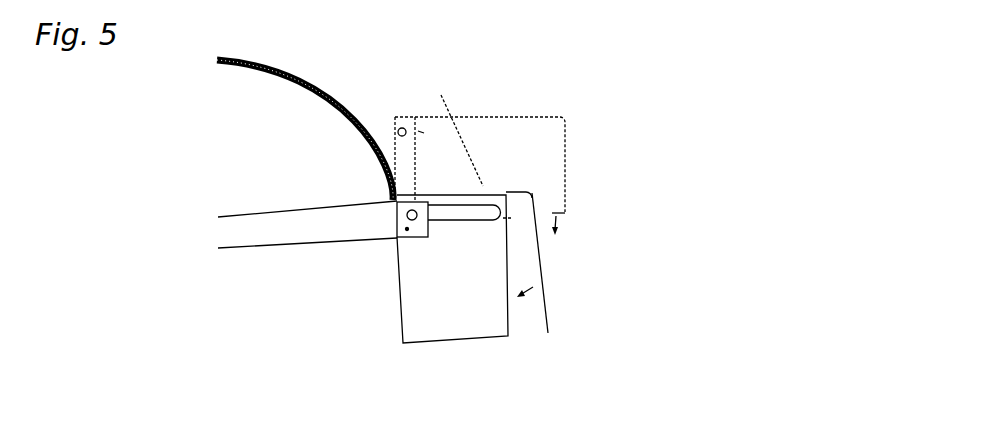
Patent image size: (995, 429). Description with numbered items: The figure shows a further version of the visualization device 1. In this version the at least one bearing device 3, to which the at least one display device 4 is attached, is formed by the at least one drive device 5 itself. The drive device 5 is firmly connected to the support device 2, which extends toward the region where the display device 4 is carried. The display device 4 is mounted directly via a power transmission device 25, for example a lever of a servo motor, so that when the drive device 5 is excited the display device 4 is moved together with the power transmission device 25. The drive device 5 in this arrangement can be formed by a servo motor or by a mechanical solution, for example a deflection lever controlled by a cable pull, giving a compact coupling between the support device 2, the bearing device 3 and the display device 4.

The visualization device 1 is at (604, 69).
The support device 2 is at (280, 228).
The bearing device 3 is at (378, 193).
The display device 4 is at (467, 295).
The drive device 5 is at (397, 240).
The power transmission device 25 is at (464, 191).